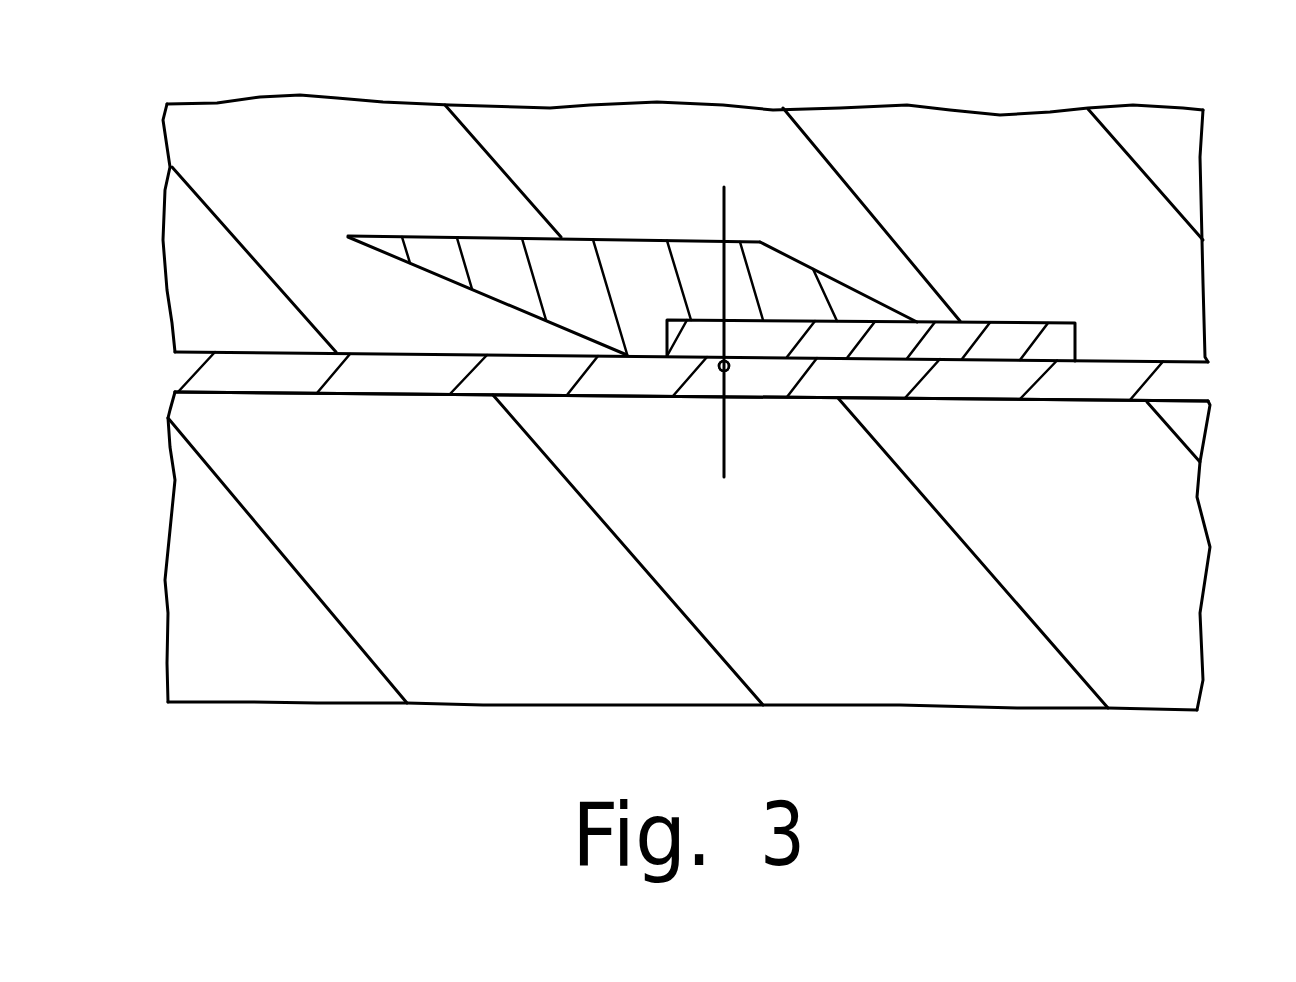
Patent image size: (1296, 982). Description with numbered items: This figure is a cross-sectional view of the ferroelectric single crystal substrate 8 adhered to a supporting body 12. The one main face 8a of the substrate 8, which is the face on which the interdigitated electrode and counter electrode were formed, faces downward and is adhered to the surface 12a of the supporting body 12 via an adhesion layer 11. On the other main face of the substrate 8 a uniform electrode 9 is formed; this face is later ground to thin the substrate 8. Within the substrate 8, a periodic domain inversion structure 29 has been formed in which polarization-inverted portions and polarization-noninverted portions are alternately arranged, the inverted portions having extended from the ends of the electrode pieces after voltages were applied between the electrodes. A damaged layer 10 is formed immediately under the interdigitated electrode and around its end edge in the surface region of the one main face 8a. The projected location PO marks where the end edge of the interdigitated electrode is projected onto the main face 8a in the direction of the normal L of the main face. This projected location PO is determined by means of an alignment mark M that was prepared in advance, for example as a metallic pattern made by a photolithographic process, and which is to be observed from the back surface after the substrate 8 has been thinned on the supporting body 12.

The ferroelectric single crystal substrate 8 is at (1187, 293).
The one main face 8a is at (1120, 367).
The uniform electrode 9 is at (628, 262).
The damaged layer 10 is at (998, 335).
The adhesion layer 11 is at (1193, 382).
The supporting body 12 is at (1185, 524).
The surface of the supporting body 12a is at (378, 388).
The periodic domain inversion structure 29 is at (765, 238).
The normal of the main face L is at (723, 220).
The alignment mark M is at (728, 372).
The projected location of the end of the interdigitated electrode PO is at (726, 358).